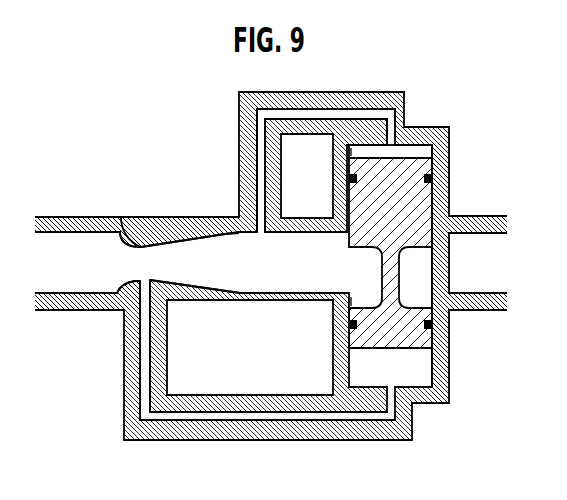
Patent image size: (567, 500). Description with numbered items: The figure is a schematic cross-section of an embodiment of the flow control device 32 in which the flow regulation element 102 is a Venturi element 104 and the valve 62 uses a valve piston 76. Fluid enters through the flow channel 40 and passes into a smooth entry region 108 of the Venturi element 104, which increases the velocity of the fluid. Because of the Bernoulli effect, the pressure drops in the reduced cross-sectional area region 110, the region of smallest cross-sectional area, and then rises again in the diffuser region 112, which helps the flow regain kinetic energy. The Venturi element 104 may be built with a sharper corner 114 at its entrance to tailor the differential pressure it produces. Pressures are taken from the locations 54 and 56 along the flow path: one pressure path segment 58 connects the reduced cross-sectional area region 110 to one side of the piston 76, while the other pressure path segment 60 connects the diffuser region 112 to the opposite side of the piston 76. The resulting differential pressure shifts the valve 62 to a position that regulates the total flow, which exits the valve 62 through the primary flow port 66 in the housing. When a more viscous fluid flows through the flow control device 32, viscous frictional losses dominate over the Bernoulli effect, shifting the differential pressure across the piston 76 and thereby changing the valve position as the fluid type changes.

The flow control device 32 is at (189, 130).
The flow channel 40 is at (68, 230).
The location 54 is at (151, 271).
The location 56 is at (275, 224).
The pressure path segment 58 is at (248, 423).
The pressure path segment 60 is at (356, 110).
The valve 62 is at (444, 197).
The primary flow port 66 is at (485, 296).
The valve piston 76 is at (402, 216).
The flow regulation element 102 is at (146, 209).
The Venturi element 104 is at (210, 225).
The smooth entry region 108 is at (127, 232).
The reduced cross-sectional area region 110 is at (146, 247).
The diffuser region 112 is at (214, 293).
The corner 114 is at (122, 297).